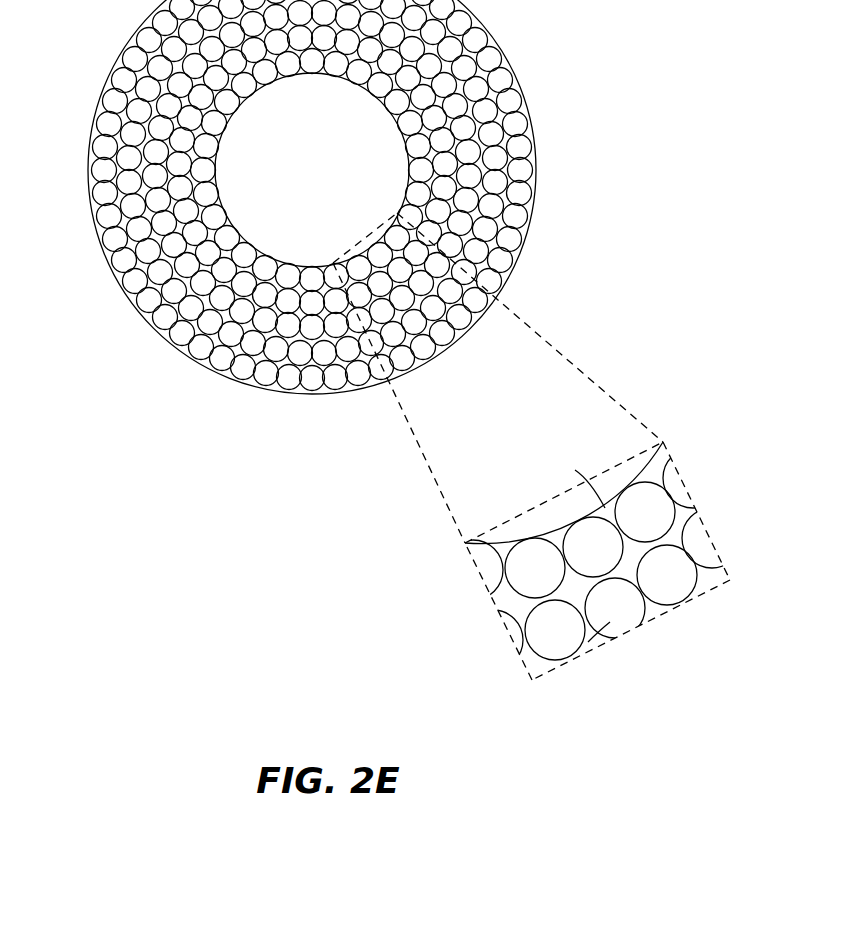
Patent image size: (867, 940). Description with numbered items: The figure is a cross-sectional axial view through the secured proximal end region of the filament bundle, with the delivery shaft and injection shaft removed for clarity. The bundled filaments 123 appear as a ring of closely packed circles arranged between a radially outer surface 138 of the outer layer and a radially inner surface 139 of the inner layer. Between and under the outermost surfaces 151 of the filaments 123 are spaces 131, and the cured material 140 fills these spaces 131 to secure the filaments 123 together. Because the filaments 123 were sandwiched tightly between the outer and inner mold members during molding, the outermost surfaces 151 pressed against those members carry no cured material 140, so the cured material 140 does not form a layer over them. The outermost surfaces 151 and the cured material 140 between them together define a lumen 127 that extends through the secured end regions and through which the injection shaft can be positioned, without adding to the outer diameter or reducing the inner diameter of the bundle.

The filaments 123 is at (497, 125).
The lumen 127 is at (279, 175).
The spaces 131 is at (715, 586).
The radially outer surface 138 is at (547, 182).
The radially inner surface 139 is at (382, 116).
The cured material 140 is at (556, 538).
The outermost surfaces 151 is at (633, 482).